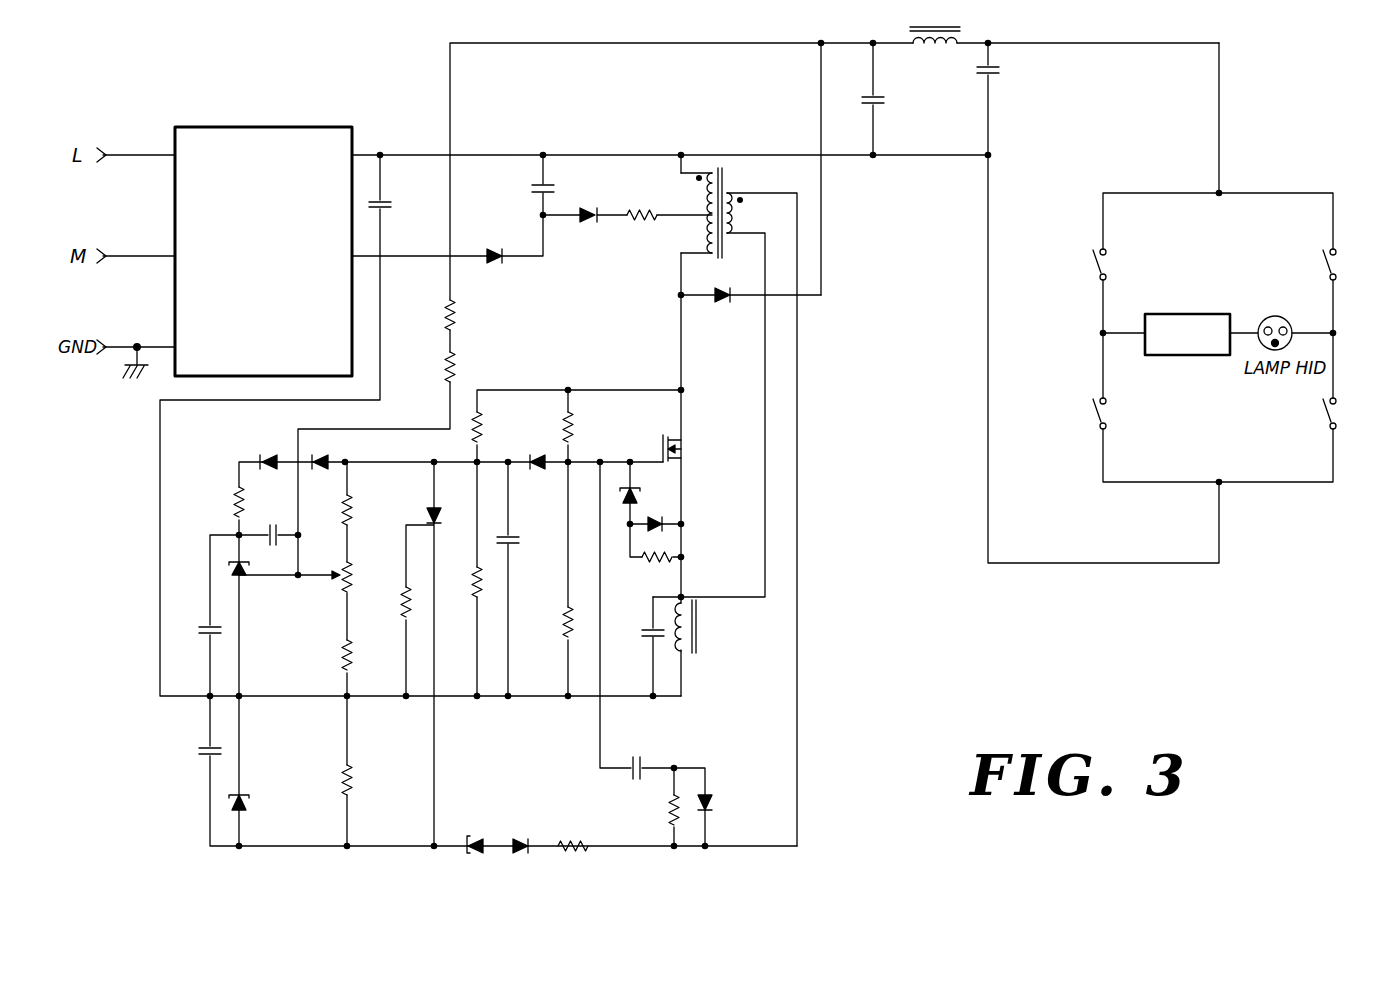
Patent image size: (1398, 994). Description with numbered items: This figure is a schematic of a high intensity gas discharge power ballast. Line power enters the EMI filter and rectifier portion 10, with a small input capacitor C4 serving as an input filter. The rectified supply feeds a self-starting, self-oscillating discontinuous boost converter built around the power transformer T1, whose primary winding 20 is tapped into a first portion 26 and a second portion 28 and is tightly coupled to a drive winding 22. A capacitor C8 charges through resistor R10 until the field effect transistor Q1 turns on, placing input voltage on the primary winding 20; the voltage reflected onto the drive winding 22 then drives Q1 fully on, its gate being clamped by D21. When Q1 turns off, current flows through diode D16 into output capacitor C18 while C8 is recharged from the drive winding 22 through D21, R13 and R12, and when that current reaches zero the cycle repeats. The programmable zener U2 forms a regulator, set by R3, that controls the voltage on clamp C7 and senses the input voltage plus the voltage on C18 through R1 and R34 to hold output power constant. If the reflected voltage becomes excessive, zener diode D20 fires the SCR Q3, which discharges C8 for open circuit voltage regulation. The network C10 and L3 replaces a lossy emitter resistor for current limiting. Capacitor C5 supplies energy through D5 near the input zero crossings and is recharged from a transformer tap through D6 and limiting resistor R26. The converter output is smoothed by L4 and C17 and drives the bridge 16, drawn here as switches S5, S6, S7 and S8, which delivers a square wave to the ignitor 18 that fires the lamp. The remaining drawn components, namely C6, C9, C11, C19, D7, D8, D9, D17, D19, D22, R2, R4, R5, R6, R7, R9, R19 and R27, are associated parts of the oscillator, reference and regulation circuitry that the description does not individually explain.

The EMI filter and rectifier portion 10 is at (266, 147).
The bridge 16 is at (1341, 256).
The ignitor 18 is at (1178, 314).
The primary winding 20 is at (706, 166).
The drive winding 22 is at (751, 208).
The first portion 26 is at (698, 192).
The second portion 28 is at (710, 226).
The input capacitor C4 is at (393, 206).
The capacitor C5 is at (557, 190).
The capacitor C6 is at (196, 751).
The clamp C7 is at (523, 539).
The capacitor C8 is at (643, 755).
The capacitor C9 is at (274, 523).
The capacitor C10 is at (639, 622).
The component C11 is at (553, 622).
The capacitor C17 is at (1007, 72).
The output capacitor C18 is at (893, 102).
The capacitor C19 is at (198, 618).
The diode D5 is at (493, 244).
The diode D6 is at (587, 227).
The diode D7 is at (538, 449).
The diode D8 is at (524, 832).
The diode D9 is at (721, 798).
The diode D16 is at (730, 284).
The diode D17 is at (260, 801).
The diode D19 is at (269, 449).
The zener diode D20 is at (404, 641).
The diode D21 is at (653, 485).
The diode D22 is at (666, 511).
The inductor L3 is at (701, 626).
The inductor L4 is at (935, 23).
The field effect transistor Q1 is at (690, 447).
The SCR Q3 is at (450, 514).
The resistor R1 is at (465, 365).
The resistor R2 is at (362, 509).
The resistor R3 is at (363, 577).
The resistor R4 is at (363, 655).
The resistor R5 is at (254, 501).
The resistor R6 is at (363, 779).
The resistor R7 is at (394, 603).
The resistor R9 is at (493, 427).
The resistor R10 is at (589, 427).
The resistor R12 is at (658, 810).
The resistor R13 is at (661, 567).
The resistor R19 is at (576, 831).
The limiting resistor R26 is at (638, 201).
The resistor R27 is at (461, 576).
The resistor R34 is at (472, 314).
The switch S5 is at (1346, 264).
The switch S6 is at (1346, 413).
The switch S7 is at (1117, 264).
The switch S8 is at (1117, 413).
The power transformer T1 is at (730, 205).
The programmable zener U2 is at (253, 564).